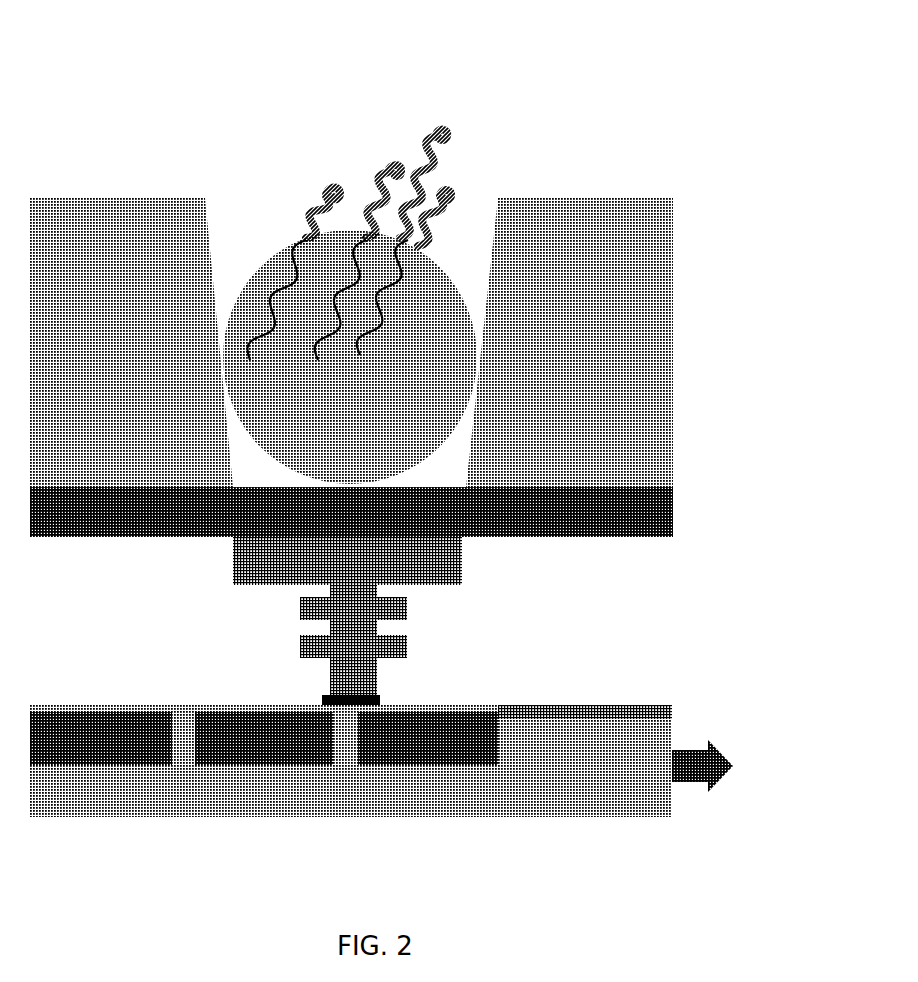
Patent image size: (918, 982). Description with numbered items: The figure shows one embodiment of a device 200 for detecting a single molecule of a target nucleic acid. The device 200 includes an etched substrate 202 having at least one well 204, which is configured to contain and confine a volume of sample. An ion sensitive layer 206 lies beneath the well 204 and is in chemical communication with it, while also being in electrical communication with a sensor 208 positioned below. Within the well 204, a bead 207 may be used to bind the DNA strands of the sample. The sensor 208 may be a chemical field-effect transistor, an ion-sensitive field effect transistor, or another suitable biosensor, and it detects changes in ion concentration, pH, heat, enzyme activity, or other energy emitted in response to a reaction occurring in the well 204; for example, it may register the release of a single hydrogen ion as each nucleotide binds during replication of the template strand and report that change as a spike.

The device 200 is at (647, 103).
The etched substrate 202 is at (674, 192).
The well 204 is at (474, 209).
The ion sensitive layer 206 is at (688, 514).
The bead 207 is at (263, 233).
The sensor 208 is at (478, 571).